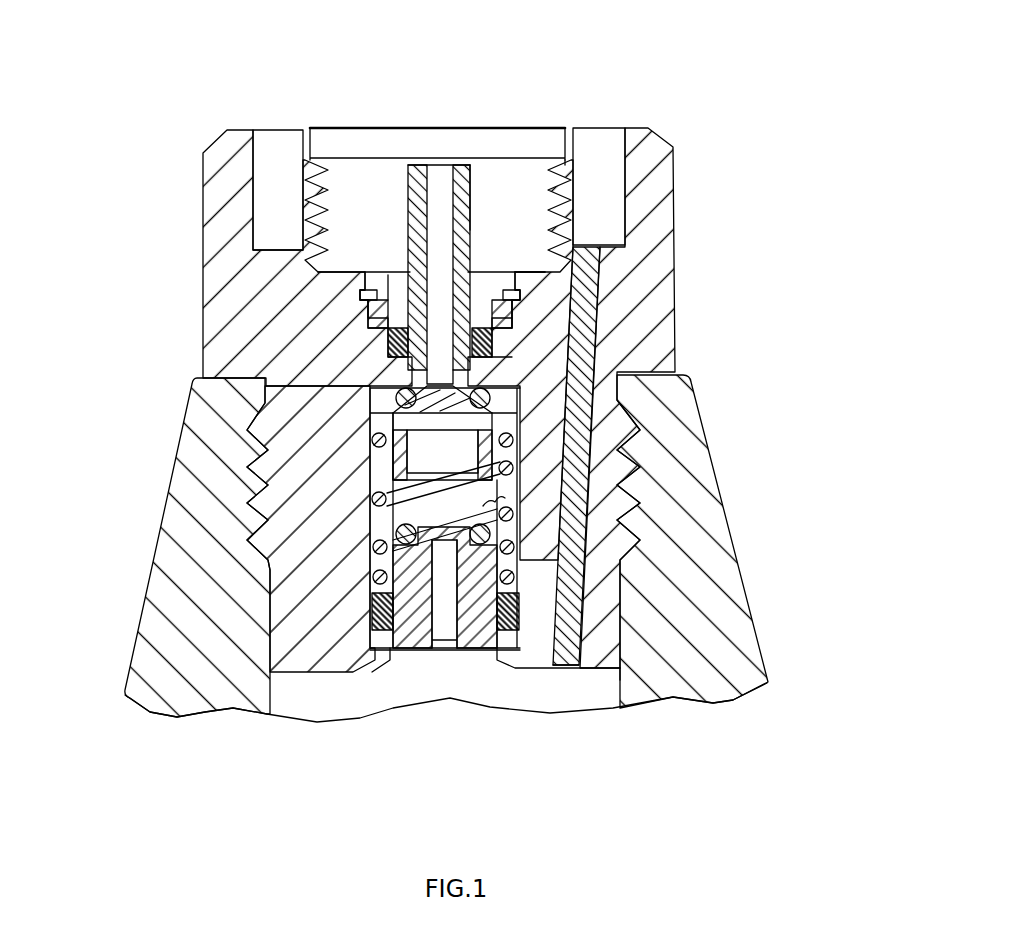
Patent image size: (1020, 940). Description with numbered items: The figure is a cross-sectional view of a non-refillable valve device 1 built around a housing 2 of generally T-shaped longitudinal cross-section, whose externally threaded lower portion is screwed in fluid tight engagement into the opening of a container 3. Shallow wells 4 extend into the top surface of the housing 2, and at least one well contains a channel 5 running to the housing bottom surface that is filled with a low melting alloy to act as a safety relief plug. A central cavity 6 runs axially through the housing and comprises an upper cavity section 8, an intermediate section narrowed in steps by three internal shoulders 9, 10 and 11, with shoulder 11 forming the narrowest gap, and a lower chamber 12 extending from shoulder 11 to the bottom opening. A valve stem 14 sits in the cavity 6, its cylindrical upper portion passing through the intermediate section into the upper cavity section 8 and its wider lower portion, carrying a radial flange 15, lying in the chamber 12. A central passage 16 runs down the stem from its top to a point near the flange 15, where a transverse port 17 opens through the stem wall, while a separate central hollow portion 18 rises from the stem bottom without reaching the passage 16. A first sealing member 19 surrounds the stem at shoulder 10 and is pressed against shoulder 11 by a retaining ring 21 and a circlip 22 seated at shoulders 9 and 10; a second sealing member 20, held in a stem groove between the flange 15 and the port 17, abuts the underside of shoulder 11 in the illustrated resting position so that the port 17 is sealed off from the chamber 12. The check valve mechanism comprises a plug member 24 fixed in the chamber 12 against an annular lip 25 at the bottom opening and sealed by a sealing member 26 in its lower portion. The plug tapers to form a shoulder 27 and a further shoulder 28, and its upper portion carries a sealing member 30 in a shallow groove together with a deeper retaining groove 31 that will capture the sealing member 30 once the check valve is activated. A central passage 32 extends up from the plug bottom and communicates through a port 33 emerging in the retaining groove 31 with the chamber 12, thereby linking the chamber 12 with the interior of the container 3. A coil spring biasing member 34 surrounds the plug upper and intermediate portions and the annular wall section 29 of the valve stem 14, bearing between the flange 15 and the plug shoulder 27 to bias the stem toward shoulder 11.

The valve device 1 is at (718, 83).
The housing 2 is at (205, 192).
The container 3 is at (707, 577).
The shallow wells 4 is at (272, 142).
The channel 5 is at (520, 470).
The central cavity 6 is at (355, 172).
The upper cavity section 8 is at (502, 220).
The internal shoulder 9 is at (520, 282).
The internal shoulder 10 is at (507, 323).
The internal shoulder 11 is at (512, 362).
The chamber 12 is at (565, 505).
The valve stem 14 is at (436, 302).
The flange 15 is at (500, 405).
The central passage 16 is at (573, 208).
The port 17 is at (388, 343).
The central hollow portion 18 is at (207, 375).
The first sealing member 19 is at (387, 350).
The second sealing member 20 is at (398, 393).
The retaining ring 21 is at (363, 310).
The circlip 22 is at (365, 297).
The plug member 24 is at (446, 648).
The annular lip 25 is at (497, 662).
The sealing member 26 is at (375, 605).
The shoulder 27 is at (372, 552).
The shoulder 28 is at (372, 577).
The annular wall section 29 is at (449, 456).
The sealing member 30 is at (395, 535).
The retaining groove 31 is at (398, 560).
The central passage 32 is at (450, 655).
The port 33 is at (577, 650).
The biasing member 34 is at (653, 663).